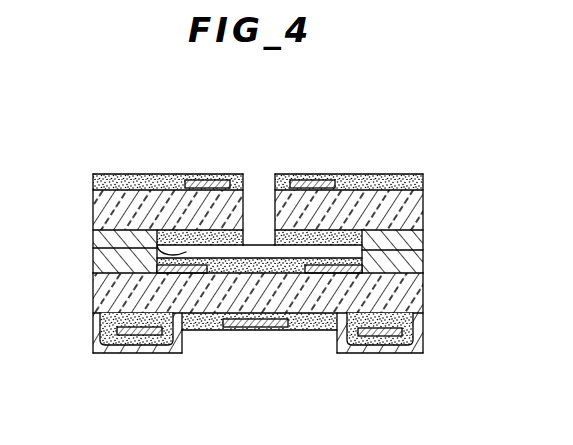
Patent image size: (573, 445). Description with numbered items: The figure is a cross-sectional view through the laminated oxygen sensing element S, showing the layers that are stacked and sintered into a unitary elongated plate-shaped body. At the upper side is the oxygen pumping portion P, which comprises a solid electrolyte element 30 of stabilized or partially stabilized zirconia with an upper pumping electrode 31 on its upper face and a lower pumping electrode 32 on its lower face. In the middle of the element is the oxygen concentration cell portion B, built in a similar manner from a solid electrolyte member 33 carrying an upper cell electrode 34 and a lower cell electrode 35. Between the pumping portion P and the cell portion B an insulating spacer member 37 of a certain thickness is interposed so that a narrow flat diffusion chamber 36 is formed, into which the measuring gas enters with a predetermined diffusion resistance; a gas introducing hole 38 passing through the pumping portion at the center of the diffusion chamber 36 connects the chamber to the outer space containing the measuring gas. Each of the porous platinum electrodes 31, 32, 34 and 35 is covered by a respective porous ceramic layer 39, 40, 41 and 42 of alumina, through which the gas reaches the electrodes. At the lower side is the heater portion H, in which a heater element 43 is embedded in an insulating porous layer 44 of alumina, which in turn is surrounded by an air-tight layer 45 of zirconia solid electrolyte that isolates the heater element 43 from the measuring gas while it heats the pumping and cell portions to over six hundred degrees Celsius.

The oxygen sensing element S is at (426, 157).
The oxygen pumping portion P is at (439, 208).
The oxygen concentration cell portion B is at (251, 303).
The heater portion H is at (432, 332).
The solid electrolyte element 30 is at (97, 205).
The upper pumping electrode 31 is at (321, 184).
The lower pumping electrode 32 is at (96, 245).
The solid electrolyte member 33 is at (97, 290).
The upper cell electrode 34 is at (424, 267).
The lower cell electrode 35 is at (243, 334).
The diffusion chamber 36 is at (206, 184).
The spacer member 37 is at (97, 262).
The gas introducing hole 38 is at (263, 197).
The porous ceramic layer 39 is at (135, 185).
The porous ceramic layer 40 is at (424, 246).
The porous ceramic layer 41 is at (293, 280).
The porous ceramic layer 42 is at (284, 331).
The heater element 43 is at (140, 348).
The porous layer 44 is at (104, 348).
The air-tight layer 45 is at (175, 348).